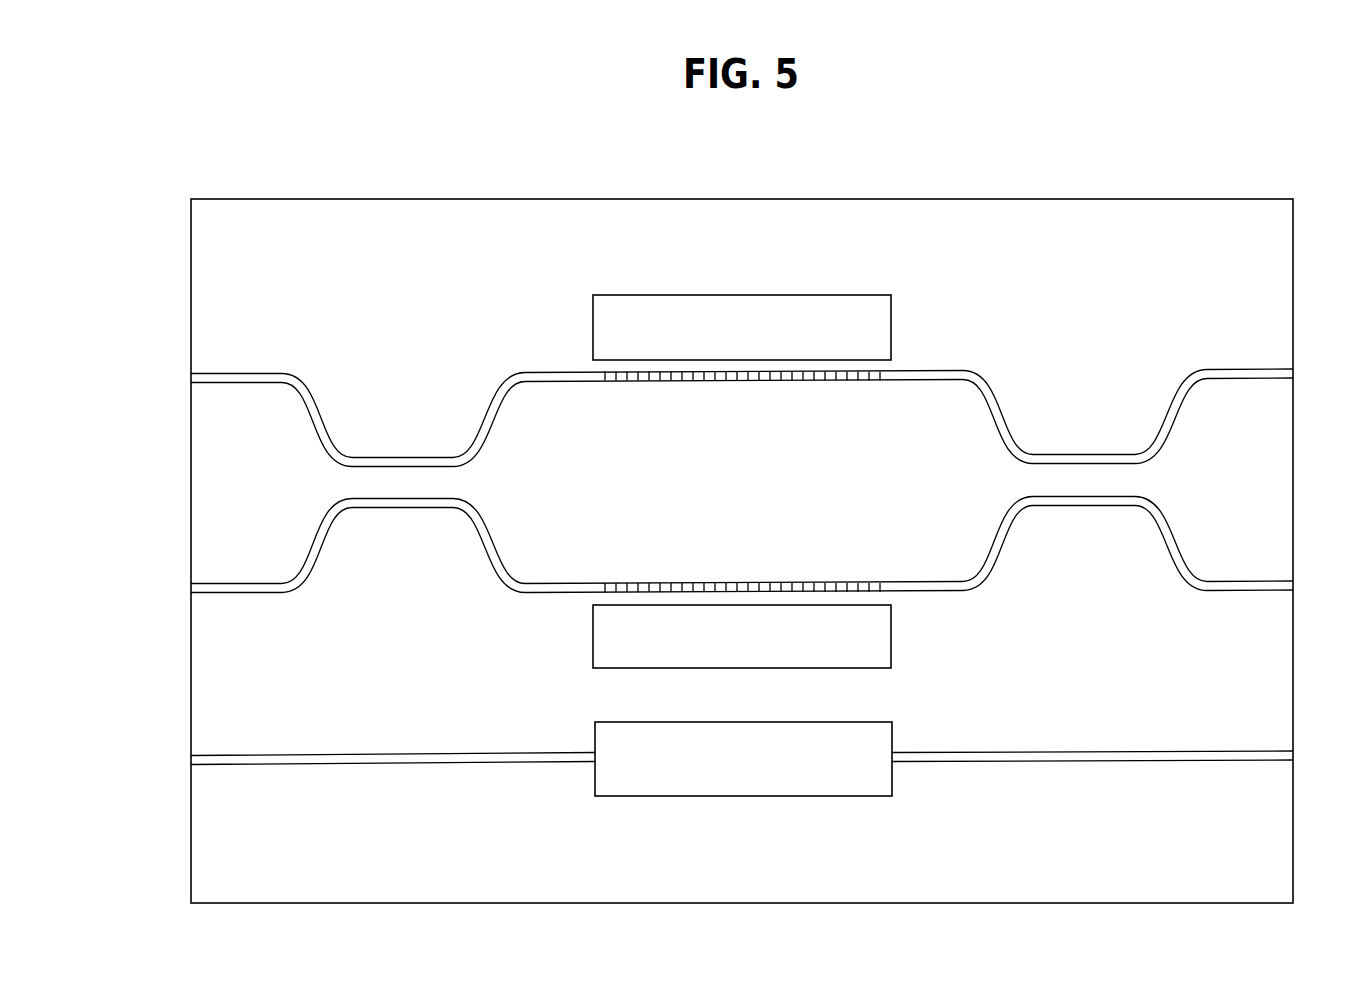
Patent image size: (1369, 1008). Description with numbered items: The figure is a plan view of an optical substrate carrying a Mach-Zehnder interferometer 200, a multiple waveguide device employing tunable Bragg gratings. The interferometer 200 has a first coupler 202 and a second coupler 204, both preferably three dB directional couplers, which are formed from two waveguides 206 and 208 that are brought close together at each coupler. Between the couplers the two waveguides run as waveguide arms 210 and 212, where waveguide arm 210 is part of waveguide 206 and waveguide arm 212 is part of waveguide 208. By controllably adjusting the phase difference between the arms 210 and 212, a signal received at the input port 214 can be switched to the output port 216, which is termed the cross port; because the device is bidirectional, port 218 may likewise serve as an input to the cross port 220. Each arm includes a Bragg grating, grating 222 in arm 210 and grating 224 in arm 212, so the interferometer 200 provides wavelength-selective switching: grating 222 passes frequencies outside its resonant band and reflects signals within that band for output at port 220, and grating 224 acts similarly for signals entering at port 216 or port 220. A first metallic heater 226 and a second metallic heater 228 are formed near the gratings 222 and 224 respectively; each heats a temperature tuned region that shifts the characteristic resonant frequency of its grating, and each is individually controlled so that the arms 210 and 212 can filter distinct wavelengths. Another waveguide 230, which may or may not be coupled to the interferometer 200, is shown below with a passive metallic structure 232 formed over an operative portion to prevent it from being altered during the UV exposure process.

The Mach-Zehnder interferometer 200 is at (893, 170).
The first coupler 202 is at (388, 530).
The second coupler 204 is at (1063, 403).
The waveguide 206 is at (305, 382).
The waveguide 208 is at (307, 586).
The waveguide arm 210 is at (932, 382).
The waveguide arm 212 is at (540, 583).
The input port 214 is at (191, 380).
The output port 216 is at (1293, 585).
The port 218 is at (1293, 373).
The output port 220 is at (191, 591).
The Bragg grating 222 is at (752, 382).
The Bragg grating 224 is at (765, 583).
The first metallic heater 226 is at (893, 330).
The second metallic heater 228 is at (893, 644).
The waveguide 230 is at (1005, 752).
The passive metallic structure 232 is at (882, 797).